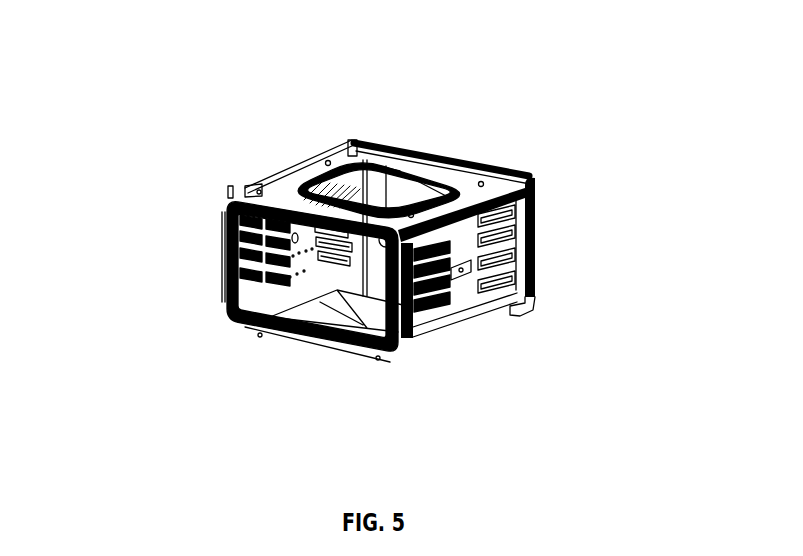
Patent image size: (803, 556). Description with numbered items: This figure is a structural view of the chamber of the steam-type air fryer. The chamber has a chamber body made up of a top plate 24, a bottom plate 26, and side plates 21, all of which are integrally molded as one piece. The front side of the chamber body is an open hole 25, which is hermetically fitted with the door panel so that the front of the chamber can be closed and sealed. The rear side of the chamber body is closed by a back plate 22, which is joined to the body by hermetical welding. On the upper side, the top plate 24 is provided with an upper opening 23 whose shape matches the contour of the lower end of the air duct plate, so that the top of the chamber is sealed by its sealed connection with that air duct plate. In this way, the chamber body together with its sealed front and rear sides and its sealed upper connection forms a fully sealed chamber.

The side plates 21 is at (518, 249).
The back plate 22 is at (538, 174).
The upper opening 23 is at (453, 190).
The top plate 24 is at (396, 160).
The open hole 25 is at (228, 311).
The bottom plate 26 is at (302, 335).